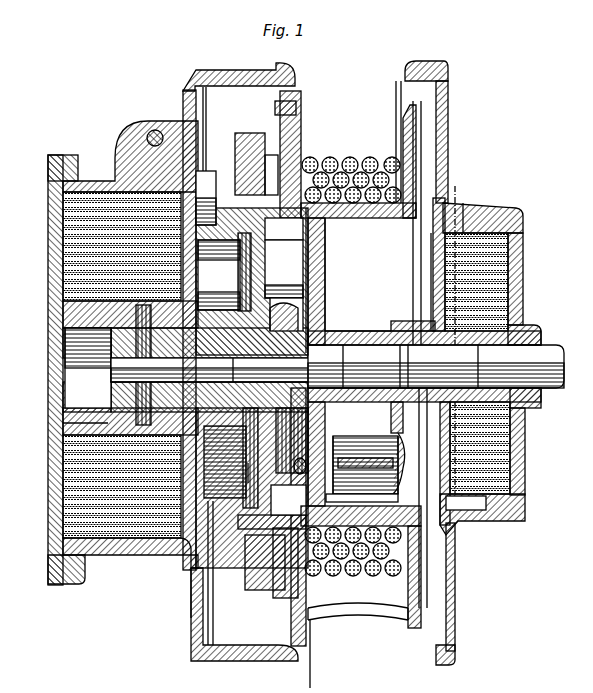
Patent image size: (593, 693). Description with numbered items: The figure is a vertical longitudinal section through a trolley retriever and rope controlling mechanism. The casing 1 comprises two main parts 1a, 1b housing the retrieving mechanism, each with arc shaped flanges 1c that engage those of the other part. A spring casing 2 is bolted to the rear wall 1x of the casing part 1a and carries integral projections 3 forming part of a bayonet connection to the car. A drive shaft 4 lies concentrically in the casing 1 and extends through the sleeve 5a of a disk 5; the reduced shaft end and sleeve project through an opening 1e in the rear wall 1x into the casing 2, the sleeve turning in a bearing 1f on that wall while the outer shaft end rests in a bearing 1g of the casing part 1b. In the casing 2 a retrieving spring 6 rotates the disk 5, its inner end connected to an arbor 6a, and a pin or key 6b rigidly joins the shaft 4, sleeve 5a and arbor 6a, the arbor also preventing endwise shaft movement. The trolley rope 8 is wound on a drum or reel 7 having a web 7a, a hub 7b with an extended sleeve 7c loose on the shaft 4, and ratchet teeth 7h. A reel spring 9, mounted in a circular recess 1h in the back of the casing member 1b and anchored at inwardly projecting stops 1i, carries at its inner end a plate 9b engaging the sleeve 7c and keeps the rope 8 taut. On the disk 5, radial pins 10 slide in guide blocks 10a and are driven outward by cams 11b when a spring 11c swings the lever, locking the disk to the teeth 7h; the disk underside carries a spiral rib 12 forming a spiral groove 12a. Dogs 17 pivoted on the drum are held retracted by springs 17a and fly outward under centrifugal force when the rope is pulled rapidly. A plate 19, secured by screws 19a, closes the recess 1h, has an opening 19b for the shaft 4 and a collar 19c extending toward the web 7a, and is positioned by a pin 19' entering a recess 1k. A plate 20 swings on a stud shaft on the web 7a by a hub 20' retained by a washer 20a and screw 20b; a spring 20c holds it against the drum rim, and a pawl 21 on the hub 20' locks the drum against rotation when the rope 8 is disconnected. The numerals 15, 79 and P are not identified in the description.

The casing 1 is at (380, 72).
The casing part 1a is at (196, 68).
The casing part 1b is at (441, 98).
The arc shaped flange 1c is at (360, 615).
The opening 1e is at (203, 312).
The bearing 1f is at (223, 367).
The bearing 1g is at (530, 318).
The circular recess or depression 1h is at (516, 217).
The inwardly projecting stop 1i is at (497, 205).
The opening or recess 1k is at (520, 525).
The back or rear wall 1x is at (183, 603).
The casing 2 is at (292, 62).
The projection 3 is at (60, 148).
The drive shaft 4 is at (520, 360).
The disk or circular plate 5 is at (391, 70).
The sleeve 5a is at (88, 368).
The retrieving spring 6 is at (118, 530).
The arbor 6a is at (57, 415).
The pin or key 6b is at (133, 365).
The drum or reel 7 is at (476, 555).
The web 7a is at (382, 212).
The hub 7b is at (345, 322).
The extended sleeve 7c is at (390, 314).
The ratchet tooth 7h is at (289, 461).
The trolley rope 8 is at (232, 200).
The reel spring 9 is at (518, 274).
The plate or device 9b is at (484, 380).
The radially extending pin or rod 10 is at (300, 292).
The guide block 10a is at (300, 228).
The cam 11b is at (310, 323).
The spring 11c is at (240, 463).
The spiral rib 12 is at (238, 271).
The spiral groove 12a is at (240, 258).
The pinion 15 is at (245, 246).
The dog 17 is at (240, 135).
The spring 17a is at (270, 104).
The plate 19 is at (415, 340).
The pin or projection 19' is at (484, 522).
The screw 19a is at (455, 200).
The opening 19b is at (425, 325).
The sleeve or collar 19c is at (392, 325).
The plate 20 is at (365, 465).
The washer 20a is at (372, 483).
The screw or locking device 20b is at (367, 470).
The spring 20c is at (335, 428).
The hub 20' is at (362, 497).
The pawl 21 is at (385, 421).
The retaining ring 79 is at (222, 520).
The section plane P is at (307, 656).